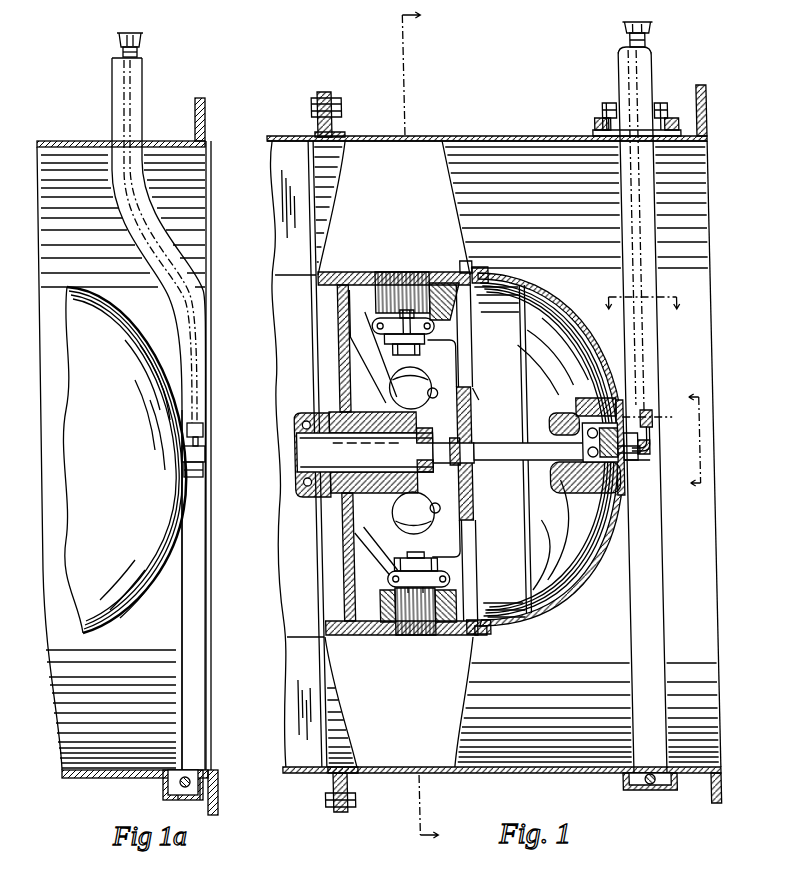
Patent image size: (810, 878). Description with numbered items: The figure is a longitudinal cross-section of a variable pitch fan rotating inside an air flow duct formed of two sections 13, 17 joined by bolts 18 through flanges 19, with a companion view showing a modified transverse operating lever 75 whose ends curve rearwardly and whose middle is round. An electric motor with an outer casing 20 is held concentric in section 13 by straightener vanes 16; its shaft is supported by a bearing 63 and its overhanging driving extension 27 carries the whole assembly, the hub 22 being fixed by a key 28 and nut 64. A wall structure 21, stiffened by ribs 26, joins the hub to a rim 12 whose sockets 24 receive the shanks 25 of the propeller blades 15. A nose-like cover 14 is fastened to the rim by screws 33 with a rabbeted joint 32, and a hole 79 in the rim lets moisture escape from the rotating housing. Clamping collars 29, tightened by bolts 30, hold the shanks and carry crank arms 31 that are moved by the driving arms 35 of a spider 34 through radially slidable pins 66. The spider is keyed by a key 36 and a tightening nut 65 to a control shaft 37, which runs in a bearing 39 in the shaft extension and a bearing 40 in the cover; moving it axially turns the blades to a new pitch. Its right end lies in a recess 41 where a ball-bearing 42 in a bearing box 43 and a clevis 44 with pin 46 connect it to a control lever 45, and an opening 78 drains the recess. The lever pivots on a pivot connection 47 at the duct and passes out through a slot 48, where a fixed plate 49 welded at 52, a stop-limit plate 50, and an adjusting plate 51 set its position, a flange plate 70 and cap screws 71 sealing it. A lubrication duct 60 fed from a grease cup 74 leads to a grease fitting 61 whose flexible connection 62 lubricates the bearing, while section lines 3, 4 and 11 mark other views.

In FIG. 1, the section line 11- 11 is at (688, 440).
In FIG. 1, the rim 12 is at (372, 272).
In FIG. 1, the air flow duct section 13 is at (280, 136).
In FIG. 1, the nose-like cover 14 is at (572, 305).
In FIG. 1A, the nose-like cover 14 is at (110, 300).
In FIG. 1, the propeller blades 15 is at (397, 454).
In FIG. 1, the straightener vanes 16 is at (276, 165).
In FIG. 1, the air flow duct section 17 is at (510, 136).
In FIG. 1A, the air flow duct section 17 is at (46, 141).
In FIG. 1, the bolts 18 is at (319, 104).
In FIG. 1, the joining flanges 19 is at (332, 92).
In FIG. 1, the outer casing 20 is at (290, 397).
In FIG. 1, the wall structure 21 is at (341, 342).
In FIG. 1, the hub 22 is at (393, 520).
In FIG. 1, the sockets 24 is at (460, 303).
In FIG. 1, the shanks 25 is at (411, 275).
In FIG. 1, the ribs 26 is at (365, 334).
In FIG. 1, the overhanging driving extension 27 is at (298, 465).
In FIG. 1, the key 28 is at (365, 414).
In FIG. 1, the clamping collars 29 is at (440, 321).
In FIG. 1, the bolts 30 is at (440, 334).
In FIG. 1, the crank arms 31 is at (427, 342).
In FIG. 1, the rabbeted engagement 32 is at (492, 272).
In FIG. 1, the screws 33 is at (474, 261).
In FIG. 1, the spider 34 is at (484, 362).
In FIG. 1, the driving arms 35 is at (460, 362).
In FIG. 1, the key 36 is at (490, 425).
In FIG. 1, the control shaft 37 is at (510, 460).
In FIG. 1, the bearing 39 is at (400, 457).
In FIG. 1, the section line 3- 3 is at (641, 313).
In FIG. 1, the bearing 40 is at (555, 418).
In FIG. 1, the recess 41 is at (583, 493).
In FIG. 1, the ball-bearing 42 is at (597, 423).
In FIG. 1, the bearing box 43 is at (630, 460).
In FIG. 1, the clevis 44 is at (640, 460).
In FIG. 1A, the clevis 44 is at (205, 477).
In FIG. 1, the control lever 45 is at (665, 347).
In FIG. 1, the pin 46 is at (652, 452).
In FIG. 1A, the pin 46 is at (205, 455).
In FIG. 1, the pivot connection 47 is at (644, 790).
In FIG. 1A, the pivot connection 47 is at (184, 790).
In FIG. 1, the slot 48 is at (611, 137).
In FIG. 1, the lowermost plate 49 is at (600, 119).
In FIG. 1, the section line 4- 4 is at (429, 426).
In FIG. 1, the stop-limit plate 50 is at (608, 118).
In FIG. 1, the adjusting plate 51 is at (612, 103).
In FIG. 1, the welding 52 is at (680, 118).
In FIG. 1, the lubrication duct 60 is at (660, 250).
In FIG. 1A, the lubrication duct 60 is at (168, 240).
In FIG. 1, the grease fitting 61 is at (652, 412).
In FIG. 1, the flexible connection 62 is at (655, 447).
In FIG. 1, the bearing 63 is at (305, 497).
In FIG. 1, the nut 64 is at (445, 475).
In FIG. 1, the tightening nut 65 is at (455, 438).
In FIG. 1, the radially slidable pins 66 is at (404, 355).
In FIG. 1, the flange plate 70 is at (617, 103).
In FIG. 1, the cap screws 71 is at (668, 103).
In FIG. 1, the grease cup 74 is at (660, 30).
In FIG. 1A, the grease cup 74 is at (142, 48).
In FIG. 1A, the transverse operating lever 75 is at (182, 648).
In FIG. 1, the opening 78 is at (585, 405).
In FIG. 1, the hole 79 is at (459, 272).